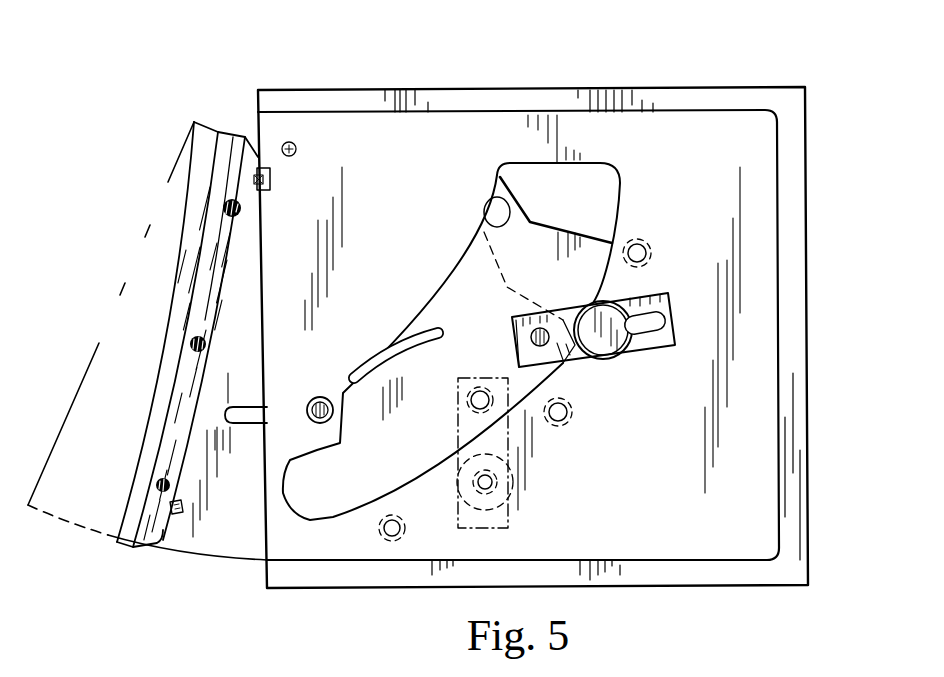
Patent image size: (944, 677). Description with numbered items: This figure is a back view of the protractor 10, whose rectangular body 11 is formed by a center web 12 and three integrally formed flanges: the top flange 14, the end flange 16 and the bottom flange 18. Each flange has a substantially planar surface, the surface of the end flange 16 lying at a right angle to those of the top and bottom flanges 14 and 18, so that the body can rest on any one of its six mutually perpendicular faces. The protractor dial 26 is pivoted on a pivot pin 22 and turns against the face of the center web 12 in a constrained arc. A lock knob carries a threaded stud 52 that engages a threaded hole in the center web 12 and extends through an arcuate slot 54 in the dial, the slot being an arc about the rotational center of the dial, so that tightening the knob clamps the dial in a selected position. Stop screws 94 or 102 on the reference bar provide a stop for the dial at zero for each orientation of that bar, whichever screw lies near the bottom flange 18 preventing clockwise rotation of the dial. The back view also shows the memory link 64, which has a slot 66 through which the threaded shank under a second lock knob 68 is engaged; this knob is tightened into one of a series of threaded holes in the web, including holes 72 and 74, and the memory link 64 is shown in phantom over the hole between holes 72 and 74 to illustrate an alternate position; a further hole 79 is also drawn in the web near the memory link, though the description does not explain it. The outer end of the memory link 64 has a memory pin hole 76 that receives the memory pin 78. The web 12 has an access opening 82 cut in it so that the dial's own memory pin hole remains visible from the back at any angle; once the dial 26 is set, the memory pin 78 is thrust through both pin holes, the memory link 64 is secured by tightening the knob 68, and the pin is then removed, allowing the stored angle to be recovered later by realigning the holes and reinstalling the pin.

The protractor 10 is at (177, 140).
The rectangular body 11 is at (339, 89).
The center web 12 is at (697, 132).
The top flange 14 is at (518, 88).
The end flange 16 is at (808, 373).
The bottom flange 18 is at (684, 587).
The pivot pin 22 is at (289, 151).
The protractor dial 26 is at (230, 562).
The threaded stud 52 is at (321, 396).
The arcuate slot 54 is at (252, 404).
The memory link 64 is at (577, 363).
The slot 66 is at (664, 308).
The lock knob 68 is at (606, 302).
The threaded hole 72 is at (558, 427).
The threaded hole 74 is at (401, 535).
The memory pin hole 76 is at (535, 351).
The memory pin 78 is at (531, 339).
The hole 79 is at (639, 238).
The access opening 82 is at (497, 198).
The stop screw 94 is at (179, 514).
The stop screw 102 is at (256, 178).